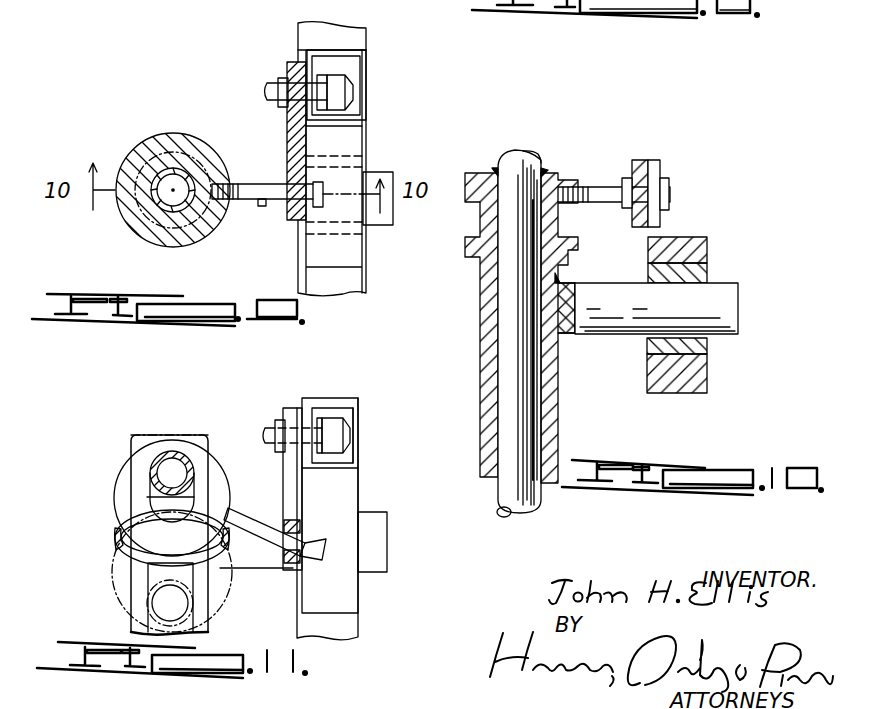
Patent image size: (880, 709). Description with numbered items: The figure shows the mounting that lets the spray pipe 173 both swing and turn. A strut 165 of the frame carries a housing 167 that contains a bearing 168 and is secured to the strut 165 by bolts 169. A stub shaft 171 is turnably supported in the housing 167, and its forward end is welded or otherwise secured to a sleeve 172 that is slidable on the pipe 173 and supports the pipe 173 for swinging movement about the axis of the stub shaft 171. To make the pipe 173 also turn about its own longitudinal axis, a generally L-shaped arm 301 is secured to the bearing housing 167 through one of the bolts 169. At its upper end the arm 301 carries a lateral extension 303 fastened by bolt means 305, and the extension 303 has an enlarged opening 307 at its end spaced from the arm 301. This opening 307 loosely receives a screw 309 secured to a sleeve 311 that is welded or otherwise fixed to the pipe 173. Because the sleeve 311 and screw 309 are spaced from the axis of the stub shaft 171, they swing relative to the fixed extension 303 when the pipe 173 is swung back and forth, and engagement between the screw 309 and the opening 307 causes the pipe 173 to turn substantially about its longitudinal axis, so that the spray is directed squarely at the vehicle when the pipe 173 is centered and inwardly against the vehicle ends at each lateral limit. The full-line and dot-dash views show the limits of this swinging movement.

In FIG. 9, the strut 165 is at (343, 282).
In FIG. 11, the strut 165 is at (350, 627).
In FIG. 9, the housing 167 is at (363, 137).
In FIG. 11, the housing 167 is at (360, 477).
In FIG. 10, the housing 167 is at (710, 248).
In FIG. 10, the bearing 168 is at (705, 277).
In FIG. 9, the bolts 169 is at (363, 102).
In FIG. 11, the bolts 169 is at (353, 447).
In FIG. 9, the stub shaft 171 is at (250, 153).
In FIG. 11, the stub shaft 171 is at (262, 538).
In FIG. 10, the stub shaft 171 is at (735, 313).
In FIG. 10, the sleeve 172 is at (476, 300).
In FIG. 9, the pipe 173 is at (132, 230).
In FIG. 11, the pipe 173 is at (188, 498).
In FIG. 10, the pipe 173 is at (537, 503).
In FIG. 9, the L-shaped arm 301 is at (342, 72).
In FIG. 11, the L-shaped arm 301 is at (322, 416).
In FIG. 10, the L-shaped arm 301 is at (667, 165).
In FIG. 9, the lateral extension 303 is at (277, 103).
In FIG. 11, the lateral extension 303 is at (277, 460).
In FIG. 10, the lateral extension 303 is at (633, 158).
In FIG. 9, the bolt means 305 is at (330, 97).
In FIG. 11, the bolt means 305 is at (320, 420).
In FIG. 10, the bolt means 305 is at (612, 190).
In FIG. 9, the enlarged opening 307 is at (327, 185).
In FIG. 11, the enlarged opening 307 is at (323, 548).
In FIG. 9, the screw 309 is at (263, 205).
In FIG. 11, the screw 309 is at (263, 522).
In FIG. 10, the screw 309 is at (603, 203).
In FIG. 9, the sleeve 311 is at (166, 132).
In FIG. 11, the sleeve 311 is at (115, 476).
In FIG. 10, the sleeve 311 is at (498, 150).